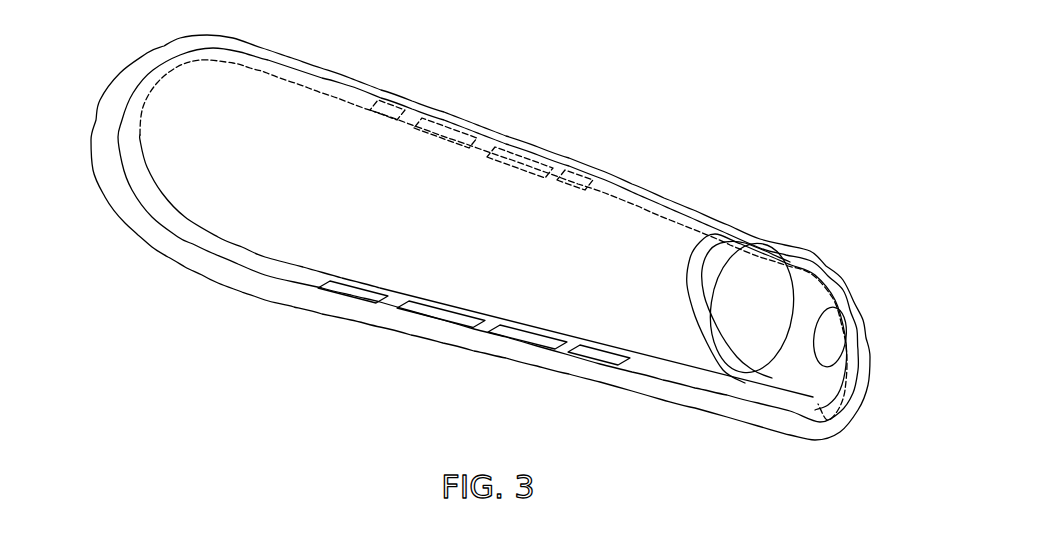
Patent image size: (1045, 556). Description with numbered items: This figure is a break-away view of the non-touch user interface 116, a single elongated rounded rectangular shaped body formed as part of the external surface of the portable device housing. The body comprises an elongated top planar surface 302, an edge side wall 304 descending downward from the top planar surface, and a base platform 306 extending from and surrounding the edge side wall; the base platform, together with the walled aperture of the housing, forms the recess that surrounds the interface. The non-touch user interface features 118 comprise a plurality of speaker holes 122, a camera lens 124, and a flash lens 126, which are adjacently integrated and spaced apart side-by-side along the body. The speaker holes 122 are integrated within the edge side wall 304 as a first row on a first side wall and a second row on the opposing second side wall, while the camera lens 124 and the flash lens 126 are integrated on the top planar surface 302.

The non-touch user interface 116 is at (876, 449).
The non-touch user interface features 118 is at (480, 18).
The speaker holes 122 is at (402, 49).
The camera lens 124 is at (748, 293).
The flash lens 126 is at (832, 335).
The elongated top planar surface 302 is at (631, 247).
The edge side wall 304 is at (135, 172).
The base platform 306 is at (106, 114).